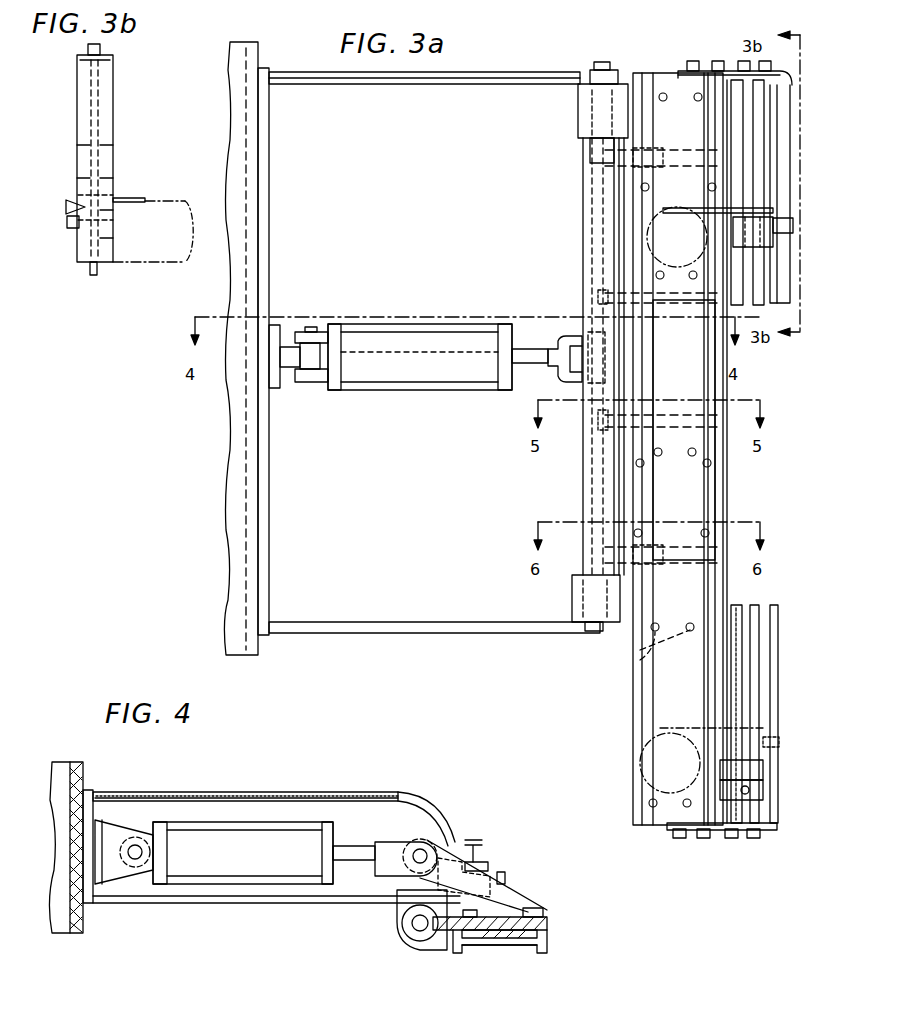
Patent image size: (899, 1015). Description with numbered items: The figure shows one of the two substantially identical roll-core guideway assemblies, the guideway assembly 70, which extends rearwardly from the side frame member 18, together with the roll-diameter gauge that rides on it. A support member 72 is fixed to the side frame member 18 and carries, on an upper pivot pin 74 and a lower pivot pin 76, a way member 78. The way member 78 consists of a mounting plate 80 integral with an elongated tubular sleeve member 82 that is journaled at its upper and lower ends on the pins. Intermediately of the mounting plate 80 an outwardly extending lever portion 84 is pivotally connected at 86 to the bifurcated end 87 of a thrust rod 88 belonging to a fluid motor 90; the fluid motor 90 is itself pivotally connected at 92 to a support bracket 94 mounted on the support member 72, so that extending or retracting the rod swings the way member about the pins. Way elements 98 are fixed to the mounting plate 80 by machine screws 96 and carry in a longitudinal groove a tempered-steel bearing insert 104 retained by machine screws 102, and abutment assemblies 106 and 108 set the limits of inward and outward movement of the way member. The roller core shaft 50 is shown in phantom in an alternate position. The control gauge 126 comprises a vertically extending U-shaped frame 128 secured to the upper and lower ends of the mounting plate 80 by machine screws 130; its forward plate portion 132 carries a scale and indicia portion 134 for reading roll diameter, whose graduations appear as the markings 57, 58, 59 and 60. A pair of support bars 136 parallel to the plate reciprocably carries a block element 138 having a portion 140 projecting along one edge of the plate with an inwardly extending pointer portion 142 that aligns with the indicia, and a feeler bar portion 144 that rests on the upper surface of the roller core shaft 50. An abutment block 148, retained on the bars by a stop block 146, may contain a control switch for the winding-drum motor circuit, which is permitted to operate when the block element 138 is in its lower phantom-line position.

In FIG. 3A, the side frame member 18 is at (232, 567).
In FIG. 4, the side frame member 18 is at (88, 772).
In FIG. 3B, the roller core shaft 50 is at (170, 198).
In FIG. 3A, the roller core shaft 50 is at (650, 232).
In FIG. 3B, the position mark 57 is at (102, 238).
In FIG. 3B, the position mark 58 is at (102, 210).
In FIG. 3B, the position mark 59 is at (102, 178).
In FIG. 3B, the position mark 60 is at (102, 145).
In FIG. 3A, the roll-core guideway assembly 70 is at (506, 71).
In FIG. 4, the roll-core guideway assembly 70 is at (310, 791).
In FIG. 3A, the support member 72 is at (429, 351).
In FIG. 4, the support member 72 is at (256, 792).
In FIG. 3A, the upper pivot pin 74 is at (602, 68).
In FIG. 3A, the lower pivot pin 76 is at (592, 632).
In FIG. 3A, the way member 78 is at (660, 74).
In FIG. 4, the way member 78 is at (556, 918).
In FIG. 4, the mounting plate 80 is at (549, 926).
In FIG. 3A, the tubular sleeve member 82 is at (590, 190).
In FIG. 4, the tubular sleeve member 82 is at (418, 941).
In FIG. 4, the lever portion 84 is at (488, 866).
In FIG. 4, the pivotal connection 86 is at (420, 849).
In FIG. 3A, the bifurcated end 87 is at (562, 335).
In FIG. 4, the bifurcated end 87 is at (385, 866).
In FIG. 3A, the thrust rod 88 is at (528, 364).
In FIG. 4, the thrust rod 88 is at (352, 846).
In FIG. 3A, the fluid motor 90 is at (420, 357).
In FIG. 4, the fluid motor 90 is at (250, 886).
In FIG. 3A, the pivotal connection 92 is at (312, 327).
In FIG. 4, the pivotal connection 92 is at (135, 862).
In FIG. 3A, the support bracket 94 is at (288, 325).
In FIG. 4, the support bracket 94 is at (112, 832).
In FIG. 4, the machine screws 96 is at (533, 907).
In FIG. 3A, the way elements 98 is at (710, 498).
In FIG. 4, the way elements 98 is at (548, 946).
In FIG. 3A, the machine screws 102 is at (640, 652).
In FIG. 3A, the bearing insert 104 is at (684, 430).
In FIG. 4, the bearing insert 104 is at (498, 953).
In FIG. 3A, the abutment assembly 106 is at (600, 292).
In FIG. 3A, the abutment assembly 108 is at (680, 160).
In FIG. 3A, the control gauge 126 is at (742, 60).
In FIG. 3A, the U-shaped frame 128 is at (762, 838).
In FIG. 3A, the machine screws 130 is at (692, 58).
In FIG. 3B, the forward plate portion 132 is at (114, 90).
In FIG. 3A, the forward plate portion 132 is at (778, 608).
In FIG. 3B, the scale and indicia portion 134 is at (107, 178).
In FIG. 3B, the support bars 136 is at (97, 274).
In FIG. 3A, the support bars 136 is at (748, 305).
In FIG. 3A, the block element 138 is at (733, 232).
In FIG. 3B, the projecting portion 140 is at (68, 226).
In FIG. 3A, the projecting portion 140 is at (781, 317).
In FIG. 3B, the pointer portion 142 is at (72, 200).
In FIG. 3B, the feeler bar portion 144 is at (134, 198).
In FIG. 3A, the feeler bar portion 144 is at (703, 207).
In FIG. 3A, the stop block 146 is at (720, 790).
In FIG. 3A, the abutment block 148 is at (720, 768).